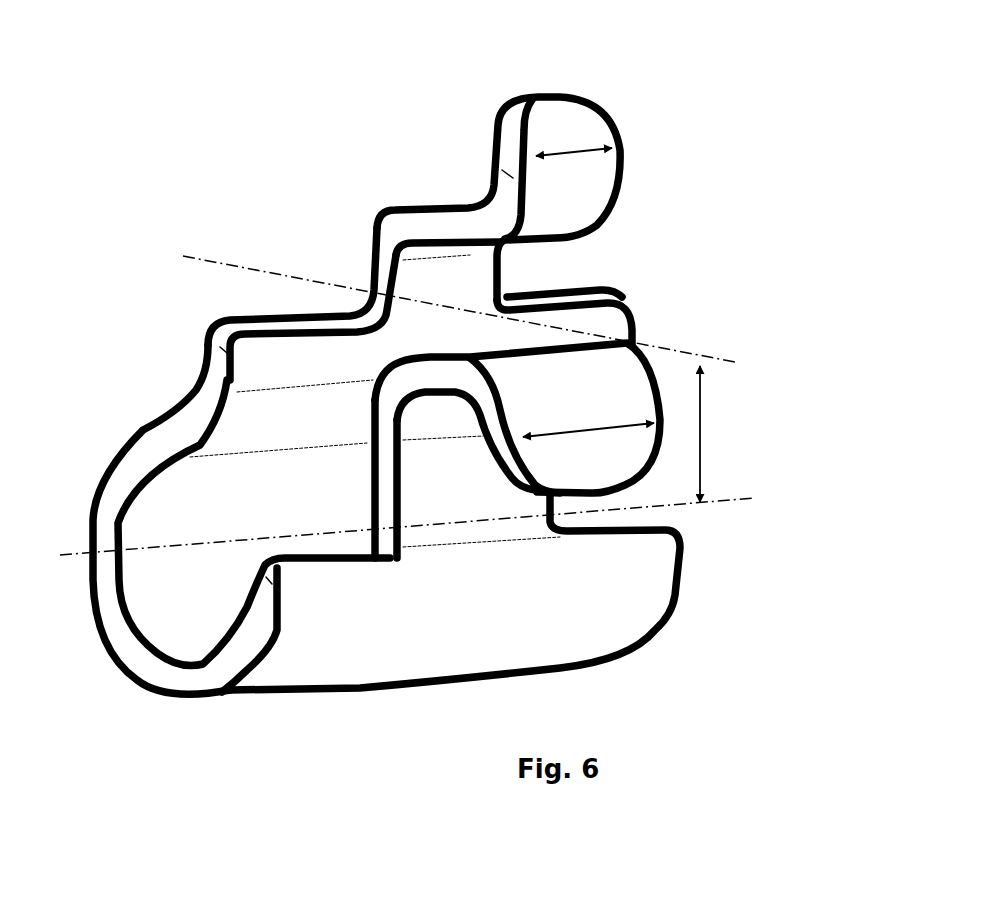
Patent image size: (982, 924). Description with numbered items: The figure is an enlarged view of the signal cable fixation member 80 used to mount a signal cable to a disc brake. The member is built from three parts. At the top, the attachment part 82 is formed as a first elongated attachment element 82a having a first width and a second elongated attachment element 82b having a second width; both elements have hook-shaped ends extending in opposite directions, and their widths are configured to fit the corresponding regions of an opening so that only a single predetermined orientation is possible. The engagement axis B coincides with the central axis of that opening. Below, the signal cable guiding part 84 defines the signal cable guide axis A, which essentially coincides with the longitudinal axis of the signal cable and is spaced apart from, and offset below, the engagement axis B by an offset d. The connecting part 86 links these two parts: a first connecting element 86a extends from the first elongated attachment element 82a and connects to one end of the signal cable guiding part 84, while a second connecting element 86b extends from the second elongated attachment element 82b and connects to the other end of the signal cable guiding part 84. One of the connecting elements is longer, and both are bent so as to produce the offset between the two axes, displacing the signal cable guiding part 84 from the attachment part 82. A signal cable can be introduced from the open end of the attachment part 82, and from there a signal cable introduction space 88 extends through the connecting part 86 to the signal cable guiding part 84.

The signal cable fixation member 80 is at (198, 88).
The attachment part 82 is at (844, 104).
The first elongated attachment element 82a is at (480, 451).
The second elongated attachment element 82b is at (476, 160).
The signal cable guiding part 84 is at (755, 427).
The connecting part 86 is at (777, 248).
The first connecting element 86a is at (350, 463).
The second connecting element 86b is at (350, 258).
The signal cable introduction space 88 is at (650, 268).